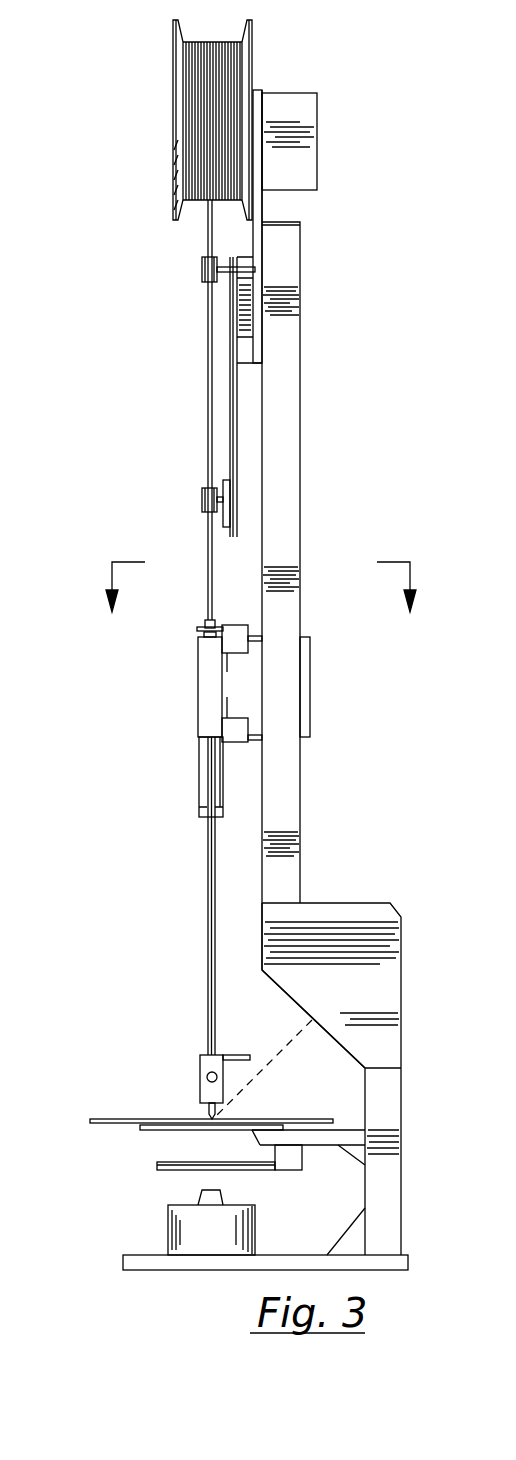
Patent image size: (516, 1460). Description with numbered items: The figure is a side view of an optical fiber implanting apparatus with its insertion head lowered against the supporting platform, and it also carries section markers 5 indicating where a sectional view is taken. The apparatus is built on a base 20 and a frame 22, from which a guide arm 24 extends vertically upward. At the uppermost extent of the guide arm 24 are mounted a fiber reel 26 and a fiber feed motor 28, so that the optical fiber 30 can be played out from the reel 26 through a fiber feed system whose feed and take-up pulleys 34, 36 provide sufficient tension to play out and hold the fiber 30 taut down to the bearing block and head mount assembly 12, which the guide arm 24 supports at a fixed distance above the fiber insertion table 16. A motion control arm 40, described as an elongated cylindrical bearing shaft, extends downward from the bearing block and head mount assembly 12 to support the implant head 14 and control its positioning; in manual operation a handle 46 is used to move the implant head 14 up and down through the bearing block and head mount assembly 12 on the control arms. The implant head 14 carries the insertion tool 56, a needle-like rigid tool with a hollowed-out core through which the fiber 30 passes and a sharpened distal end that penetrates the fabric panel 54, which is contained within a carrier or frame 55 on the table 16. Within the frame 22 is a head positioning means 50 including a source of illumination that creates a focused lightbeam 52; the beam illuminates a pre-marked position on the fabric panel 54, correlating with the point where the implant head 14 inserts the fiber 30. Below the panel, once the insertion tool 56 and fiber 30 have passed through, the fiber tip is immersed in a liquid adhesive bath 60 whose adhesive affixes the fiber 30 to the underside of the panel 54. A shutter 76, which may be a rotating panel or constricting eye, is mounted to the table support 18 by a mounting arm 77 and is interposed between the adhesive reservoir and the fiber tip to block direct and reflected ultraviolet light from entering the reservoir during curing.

The section line 5- 5 is at (260, 570).
The bearing block and head mount assembly 12 is at (198, 667).
The implant head 14 is at (200, 1087).
The fiber insertion table 16 is at (138, 1133).
The table support 18 is at (332, 1135).
The base 20 is at (148, 1268).
The frame 22 is at (338, 908).
The guide arm 24 is at (287, 422).
The fiber reel 26 is at (175, 55).
The fiber feed motor 28 is at (299, 103).
The optical fiber 30 is at (208, 232).
The feed pulley 34 is at (203, 493).
The take-up pulley 36 is at (202, 276).
The motion control arm 40 is at (208, 940).
The handle 46 is at (208, 1072).
The head positioning means 50 is at (307, 1020).
The focused lightbeam 52 is at (258, 1073).
The fabric panel 54 is at (98, 1121).
The carrier or frame 55 is at (117, 1132).
The insertion tool 56 is at (203, 1115).
The liquid adhesive bath 60 is at (168, 1228).
The shutter 76 is at (242, 1172).
The mounting arm 77 is at (303, 1153).